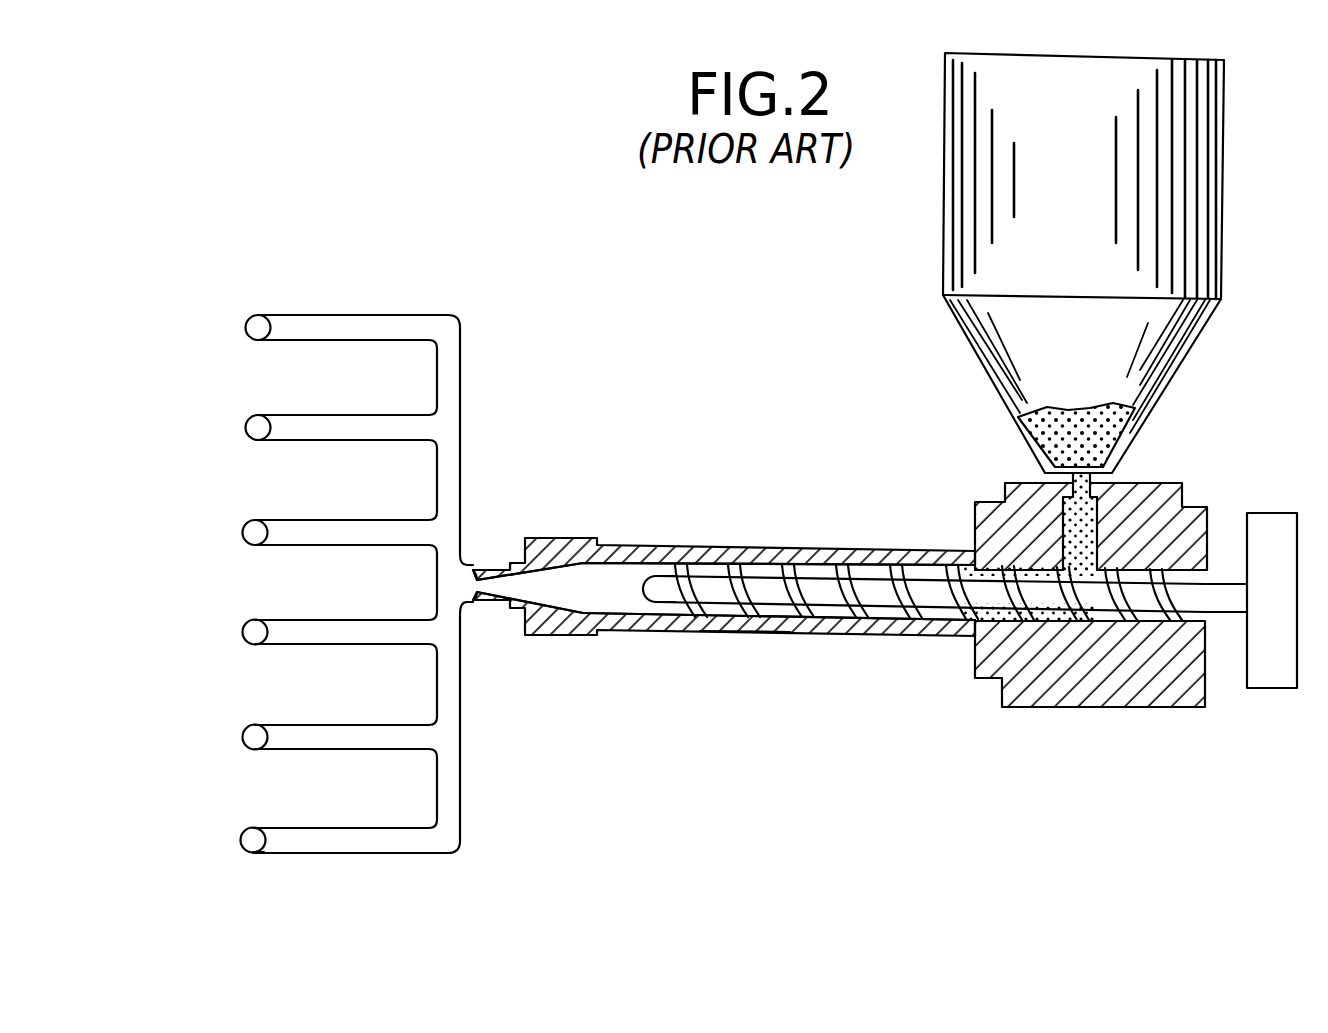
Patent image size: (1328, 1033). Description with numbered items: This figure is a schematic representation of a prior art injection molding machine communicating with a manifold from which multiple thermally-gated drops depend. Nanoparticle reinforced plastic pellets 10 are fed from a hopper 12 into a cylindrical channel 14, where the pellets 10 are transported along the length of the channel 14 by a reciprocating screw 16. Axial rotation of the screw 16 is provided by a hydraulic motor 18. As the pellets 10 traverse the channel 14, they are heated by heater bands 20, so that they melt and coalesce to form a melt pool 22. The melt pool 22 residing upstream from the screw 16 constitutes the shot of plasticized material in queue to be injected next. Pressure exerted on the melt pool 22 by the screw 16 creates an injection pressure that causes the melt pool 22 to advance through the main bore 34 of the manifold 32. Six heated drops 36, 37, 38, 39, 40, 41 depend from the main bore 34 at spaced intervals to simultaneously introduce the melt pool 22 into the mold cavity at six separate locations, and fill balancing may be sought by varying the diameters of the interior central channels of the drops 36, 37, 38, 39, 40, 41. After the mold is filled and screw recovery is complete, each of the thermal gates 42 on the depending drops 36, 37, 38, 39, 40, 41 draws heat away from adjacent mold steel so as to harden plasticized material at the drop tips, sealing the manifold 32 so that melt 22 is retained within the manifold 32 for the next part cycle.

The nanoparticle reinforced plastic pellets 10 is at (1108, 425).
The hopper 12 is at (1218, 192).
The cylindrical channel 14 is at (724, 614).
The reciprocating screw 16 is at (890, 625).
The hydraulic motor 18 is at (1273, 677).
The heater bands 20 is at (740, 625).
The melt pool 22 is at (602, 601).
The manifold 32 is at (463, 557).
The main bore 34 is at (462, 458).
The heated drop 36 is at (360, 313).
The heated drop 37 is at (340, 415).
The heated drop 38 is at (330, 520).
The heated drop 39 is at (302, 618).
The heated drop 40 is at (298, 725).
The heated drop 41 is at (312, 827).
The thermal gates 42 is at (252, 313).